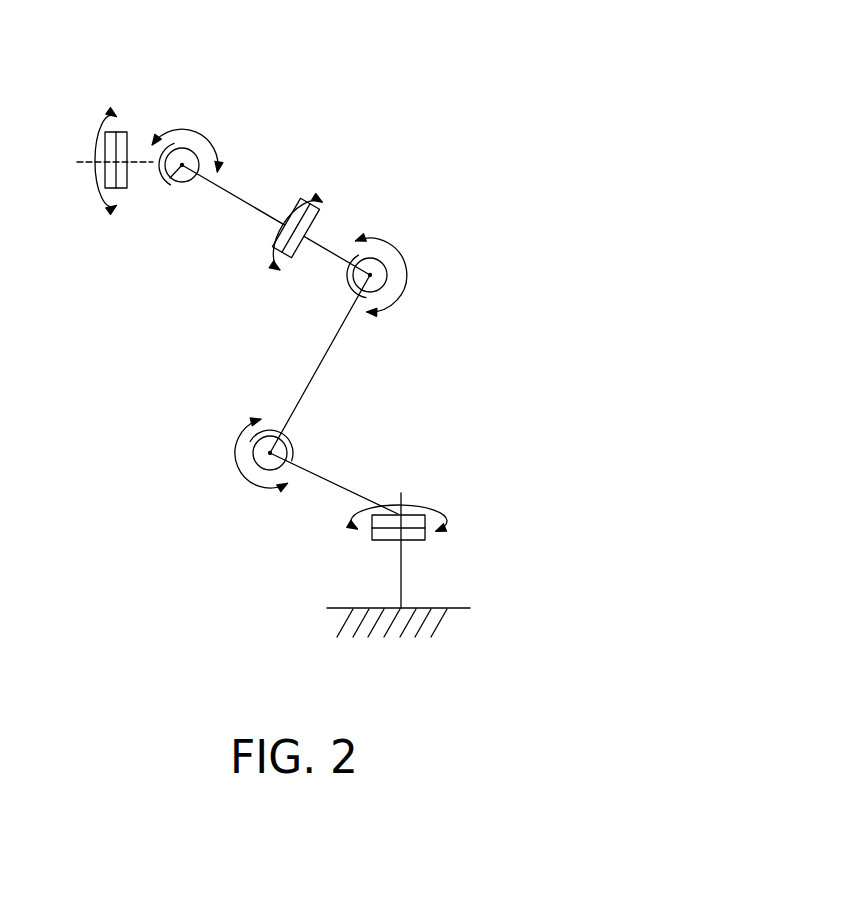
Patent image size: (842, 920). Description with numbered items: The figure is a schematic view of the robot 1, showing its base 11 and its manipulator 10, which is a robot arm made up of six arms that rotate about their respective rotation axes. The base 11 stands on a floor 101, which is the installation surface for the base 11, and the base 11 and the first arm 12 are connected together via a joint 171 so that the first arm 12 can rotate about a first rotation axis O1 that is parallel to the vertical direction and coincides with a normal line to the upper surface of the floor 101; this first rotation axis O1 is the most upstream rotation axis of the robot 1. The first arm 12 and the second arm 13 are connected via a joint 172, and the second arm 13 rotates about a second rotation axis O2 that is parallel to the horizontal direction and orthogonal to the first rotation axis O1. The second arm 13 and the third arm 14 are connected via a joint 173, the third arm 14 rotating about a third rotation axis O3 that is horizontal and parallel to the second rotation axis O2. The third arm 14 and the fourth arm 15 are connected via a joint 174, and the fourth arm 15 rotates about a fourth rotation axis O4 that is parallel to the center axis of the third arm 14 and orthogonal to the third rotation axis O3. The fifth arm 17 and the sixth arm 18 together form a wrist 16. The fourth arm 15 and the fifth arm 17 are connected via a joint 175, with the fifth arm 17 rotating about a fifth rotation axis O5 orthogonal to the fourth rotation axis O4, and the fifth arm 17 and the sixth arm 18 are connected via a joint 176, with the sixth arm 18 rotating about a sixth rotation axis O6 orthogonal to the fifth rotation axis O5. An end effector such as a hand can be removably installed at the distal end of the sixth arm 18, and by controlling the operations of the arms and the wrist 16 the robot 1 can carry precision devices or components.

The robot 1 is at (393, 70).
The manipulator 10 is at (392, 122).
The base 11 is at (453, 558).
The first arm 12 is at (381, 462).
The second arm 13 is at (292, 353).
The third arm 14 is at (351, 228).
The fourth arm 15 is at (249, 183).
The wrist 16 is at (137, 268).
The fifth arm 17 is at (143, 172).
The sixth arm 18 is at (87, 172).
The floor 101 is at (456, 607).
The joint 171 is at (453, 521).
The joint 172 is at (308, 428).
The joint 173 is at (338, 283).
The joint 174 is at (328, 186).
The joint 175 is at (194, 193).
The joint 176 is at (123, 108).
The first rotation axis O1 is at (403, 495).
The second rotation axis O2 is at (291, 444).
The third rotation axis O3 is at (352, 283).
The fourth rotation axis O4 is at (305, 226).
The fifth rotation axis O5 is at (170, 185).
The sixth rotation axis O6 is at (131, 157).